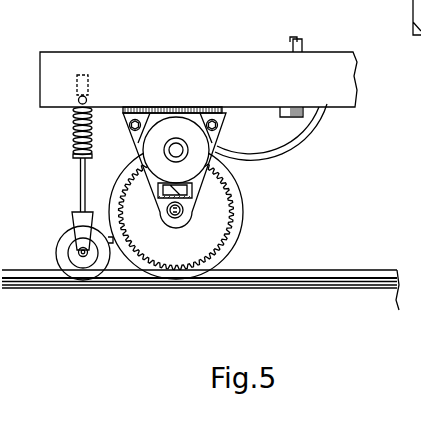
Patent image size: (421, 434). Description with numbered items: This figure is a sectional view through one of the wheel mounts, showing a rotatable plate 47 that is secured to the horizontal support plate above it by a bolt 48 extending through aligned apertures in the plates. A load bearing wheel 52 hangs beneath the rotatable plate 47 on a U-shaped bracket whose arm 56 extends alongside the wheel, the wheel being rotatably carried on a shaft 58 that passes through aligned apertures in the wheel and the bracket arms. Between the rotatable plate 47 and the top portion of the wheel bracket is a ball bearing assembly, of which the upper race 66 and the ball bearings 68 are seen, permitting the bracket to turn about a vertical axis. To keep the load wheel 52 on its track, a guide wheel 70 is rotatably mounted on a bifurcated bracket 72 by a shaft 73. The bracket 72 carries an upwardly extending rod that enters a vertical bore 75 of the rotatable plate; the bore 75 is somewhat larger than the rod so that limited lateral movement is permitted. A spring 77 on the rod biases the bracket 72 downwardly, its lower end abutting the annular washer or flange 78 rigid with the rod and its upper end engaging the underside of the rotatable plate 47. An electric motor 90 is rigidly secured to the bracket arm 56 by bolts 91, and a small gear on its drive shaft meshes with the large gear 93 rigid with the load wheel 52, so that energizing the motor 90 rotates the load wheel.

The rotatable plate 47 is at (352, 99).
The bolt 48 is at (303, 47).
The load bearing wheel 52 is at (245, 214).
The bracket arm 56 is at (199, 182).
The shaft 58 is at (167, 213).
The upper race 66 is at (232, 111).
The ball bearings 68 is at (190, 96).
The guide wheel 70 is at (57, 246).
The bifurcated bracket 72 is at (69, 210).
The shaft 73 is at (78, 252).
The bore 75 is at (76, 88).
The spring 77 is at (74, 126).
The annular washer or flange 78 is at (74, 157).
The electric motor 90 is at (200, 158).
The bolts 91 is at (219, 125).
The large gear 93 is at (232, 244).